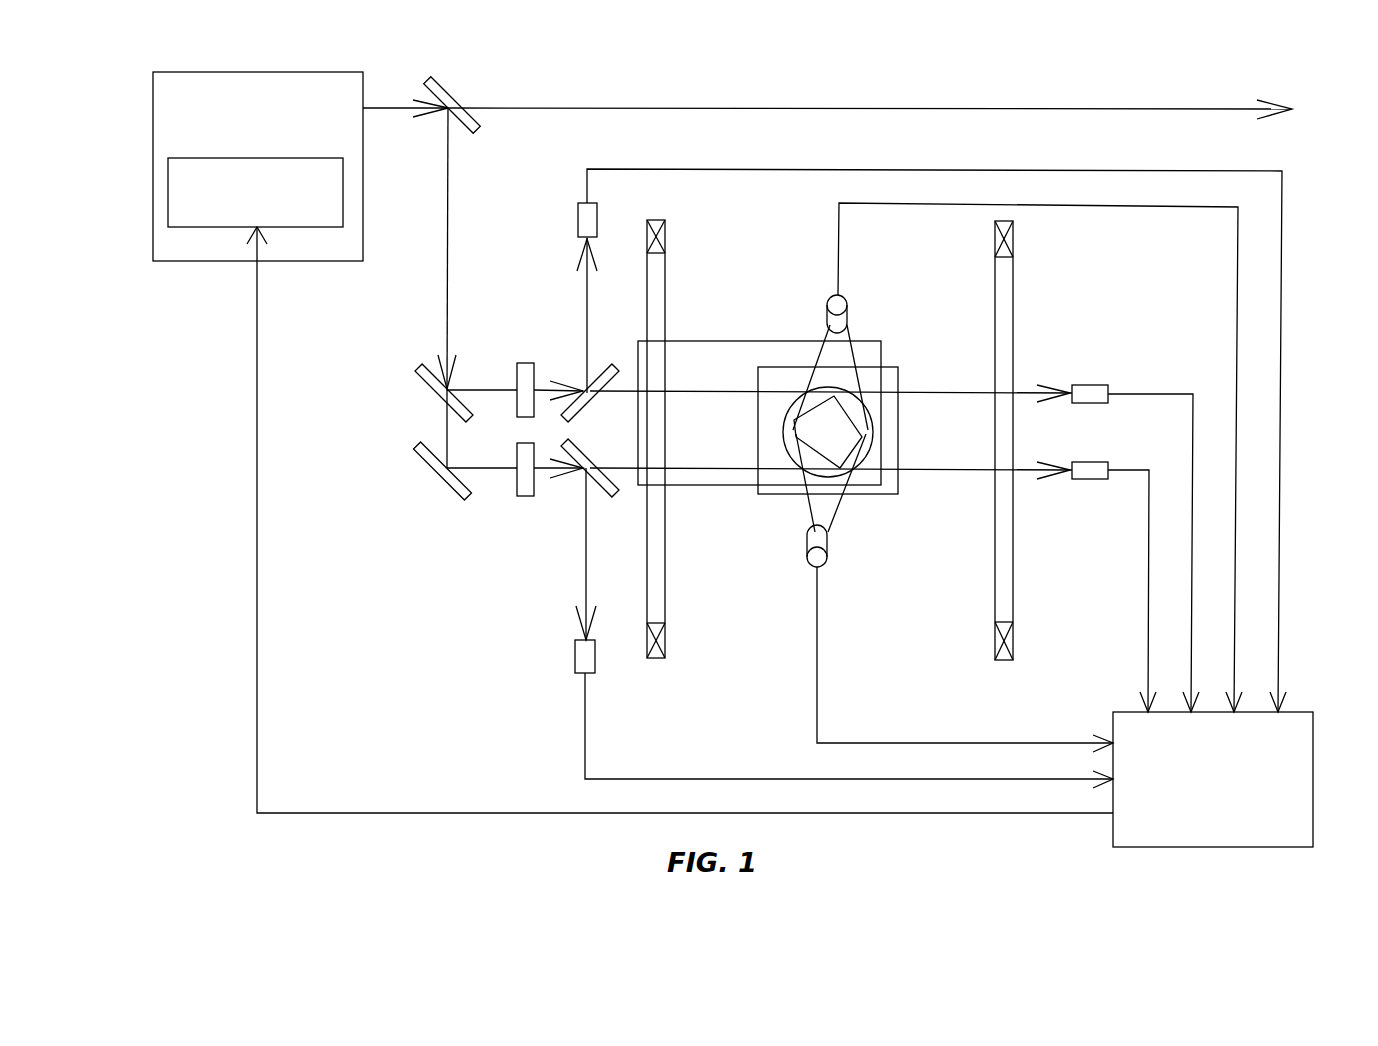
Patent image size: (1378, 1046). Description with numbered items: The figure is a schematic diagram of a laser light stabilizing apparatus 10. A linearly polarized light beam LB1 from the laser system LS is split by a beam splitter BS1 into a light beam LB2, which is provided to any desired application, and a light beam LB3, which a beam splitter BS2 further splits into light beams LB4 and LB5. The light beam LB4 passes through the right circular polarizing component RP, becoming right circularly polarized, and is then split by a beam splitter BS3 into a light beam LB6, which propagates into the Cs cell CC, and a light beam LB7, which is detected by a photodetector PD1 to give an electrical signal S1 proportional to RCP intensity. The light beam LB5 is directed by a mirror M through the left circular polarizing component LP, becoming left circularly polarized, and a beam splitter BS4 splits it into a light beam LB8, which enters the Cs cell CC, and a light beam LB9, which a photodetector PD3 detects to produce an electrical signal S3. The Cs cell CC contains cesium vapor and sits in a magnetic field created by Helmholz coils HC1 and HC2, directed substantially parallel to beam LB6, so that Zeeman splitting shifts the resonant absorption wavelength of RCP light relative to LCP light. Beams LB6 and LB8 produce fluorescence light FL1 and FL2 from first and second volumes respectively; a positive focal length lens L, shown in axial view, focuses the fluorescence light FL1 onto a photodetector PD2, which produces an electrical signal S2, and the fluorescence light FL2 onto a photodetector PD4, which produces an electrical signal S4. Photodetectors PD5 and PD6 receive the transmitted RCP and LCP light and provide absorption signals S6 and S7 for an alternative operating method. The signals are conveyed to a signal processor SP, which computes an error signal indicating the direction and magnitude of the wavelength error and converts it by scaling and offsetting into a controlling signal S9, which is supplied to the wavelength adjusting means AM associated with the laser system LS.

The laser light stabilizing apparatus 10 is at (221, 769).
The laser system LS is at (170, 262).
The wavelength adjusting means AM is at (240, 227).
The light beam LB1 is at (390, 108).
The light beam LB2 is at (598, 108).
The light beam LB3 is at (448, 177).
The light beam LB4 is at (497, 389).
The light beam LB5 is at (490, 467).
The light beam LB6 is at (692, 392).
The light beam LB7 is at (585, 313).
The light beam LB8 is at (720, 470).
The light beam LB9 is at (583, 563).
The beam splitter BS1 is at (436, 82).
The beam splitter BS2 is at (440, 368).
The beam splitter BS3 is at (599, 379).
The beam splitter BS4 is at (597, 487).
The mirror M is at (425, 445).
The right circular polarizing component RP is at (524, 362).
The left circular polarizing component LP is at (523, 496).
The photodetector PD1 is at (597, 220).
The photodetector PD2 is at (827, 548).
The photodetector PD3 is at (575, 657).
The photodetector PD4 is at (847, 312).
The photodetector PD5 is at (1100, 385).
The photodetector PD6 is at (1100, 480).
The Helmholz coil HC1 is at (666, 280).
The Helmholz coil HC2 is at (1014, 283).
The Cs cell CC is at (773, 365).
The lens L is at (873, 443).
The fluorescence light FL1 is at (798, 503).
The fluorescence light FL2 is at (857, 357).
The signal processor SP is at (1313, 742).
The electrical signal S1 is at (668, 152).
The electrical signal S2 is at (835, 660).
The electrical signal S3 is at (600, 752).
The electrical signal S4 is at (855, 213).
The absorption signal S6 is at (1208, 668).
The absorption signal S7 is at (1165, 668).
The controlling signal S9 is at (274, 276).